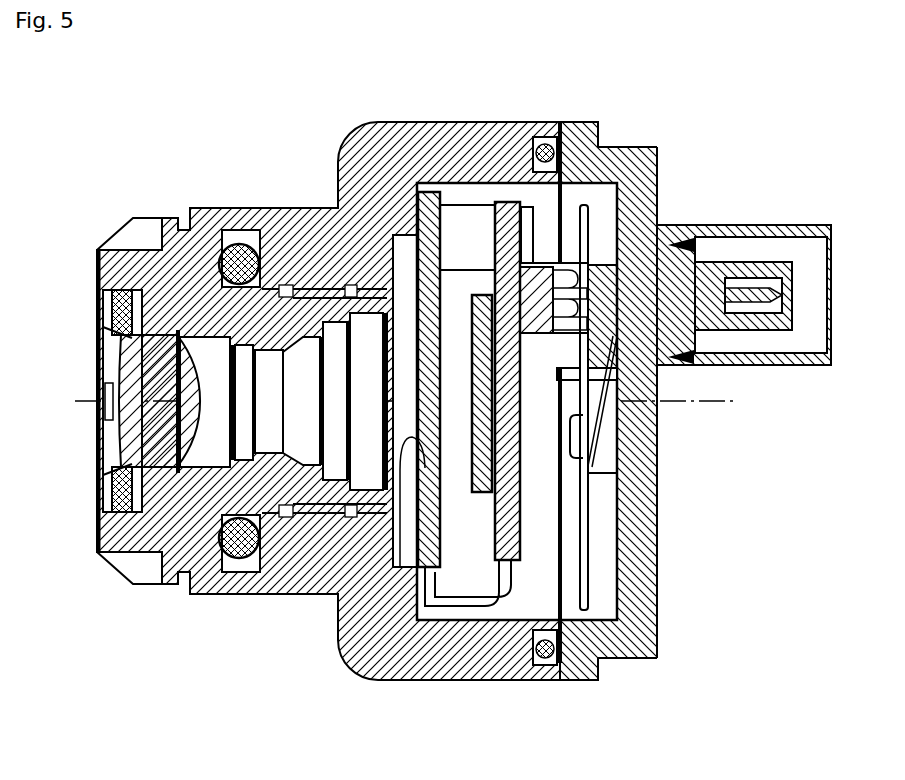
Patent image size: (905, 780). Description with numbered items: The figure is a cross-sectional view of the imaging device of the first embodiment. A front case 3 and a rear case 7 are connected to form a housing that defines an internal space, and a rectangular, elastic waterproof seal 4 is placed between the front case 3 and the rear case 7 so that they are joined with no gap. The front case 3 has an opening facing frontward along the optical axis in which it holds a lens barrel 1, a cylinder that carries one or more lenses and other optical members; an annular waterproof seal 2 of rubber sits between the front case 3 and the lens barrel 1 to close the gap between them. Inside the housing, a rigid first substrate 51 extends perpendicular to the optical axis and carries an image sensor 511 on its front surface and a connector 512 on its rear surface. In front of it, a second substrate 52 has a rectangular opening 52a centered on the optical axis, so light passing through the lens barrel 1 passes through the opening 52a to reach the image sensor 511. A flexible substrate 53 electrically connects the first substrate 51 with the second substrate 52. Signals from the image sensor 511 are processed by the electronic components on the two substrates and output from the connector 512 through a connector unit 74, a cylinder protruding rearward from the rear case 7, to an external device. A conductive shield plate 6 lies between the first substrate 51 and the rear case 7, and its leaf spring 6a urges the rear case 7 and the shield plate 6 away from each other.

The lens barrel 1 is at (170, 218).
The waterproof seal 2 is at (237, 240).
The front case 3 is at (303, 208).
The waterproof seal 4 is at (537, 122).
The first substrate 51 is at (503, 201).
The image sensor 511 is at (482, 293).
The connector 512 is at (543, 272).
The second substrate 52 is at (425, 190).
The opening 52a is at (400, 567).
The flexible substrate 53 is at (468, 608).
The shield plate 6 is at (657, 605).
The leaf spring 6a is at (657, 405).
The rear case 7 is at (617, 147).
The connector unit 74 is at (745, 225).